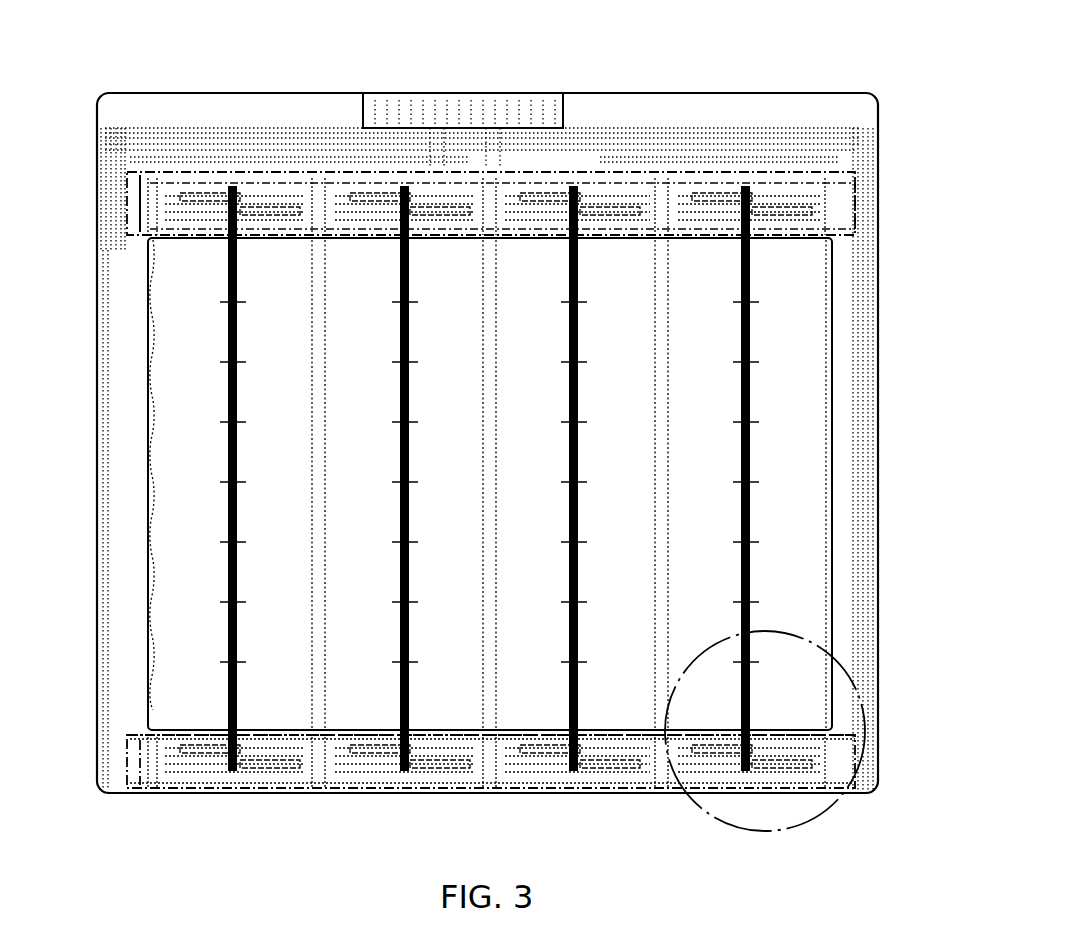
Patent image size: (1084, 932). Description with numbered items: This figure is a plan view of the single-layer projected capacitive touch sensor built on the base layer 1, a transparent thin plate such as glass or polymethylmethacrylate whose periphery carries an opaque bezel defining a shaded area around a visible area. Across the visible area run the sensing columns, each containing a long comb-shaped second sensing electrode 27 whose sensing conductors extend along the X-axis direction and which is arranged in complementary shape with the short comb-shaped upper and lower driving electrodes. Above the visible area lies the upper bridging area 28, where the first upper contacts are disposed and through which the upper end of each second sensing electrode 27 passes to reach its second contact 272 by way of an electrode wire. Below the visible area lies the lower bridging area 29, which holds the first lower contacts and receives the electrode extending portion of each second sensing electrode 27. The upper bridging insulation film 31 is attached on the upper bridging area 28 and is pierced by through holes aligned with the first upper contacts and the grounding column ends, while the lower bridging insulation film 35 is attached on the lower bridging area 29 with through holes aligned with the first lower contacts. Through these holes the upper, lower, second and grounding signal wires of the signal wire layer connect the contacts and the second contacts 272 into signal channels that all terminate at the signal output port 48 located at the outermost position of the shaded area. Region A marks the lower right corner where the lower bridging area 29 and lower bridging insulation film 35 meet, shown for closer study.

The base layer 1 is at (148, 98).
The signal output port 48 is at (497, 95).
The second contact 272 is at (693, 165).
The upper bridging area 28 is at (840, 171).
The upper bridging insulation film 31 is at (138, 229).
The second sensing electrode 27 is at (810, 392).
The enlarged region A is at (865, 693).
The lower bridging insulation film 35 is at (840, 744).
The lower bridging area 29 is at (850, 762).